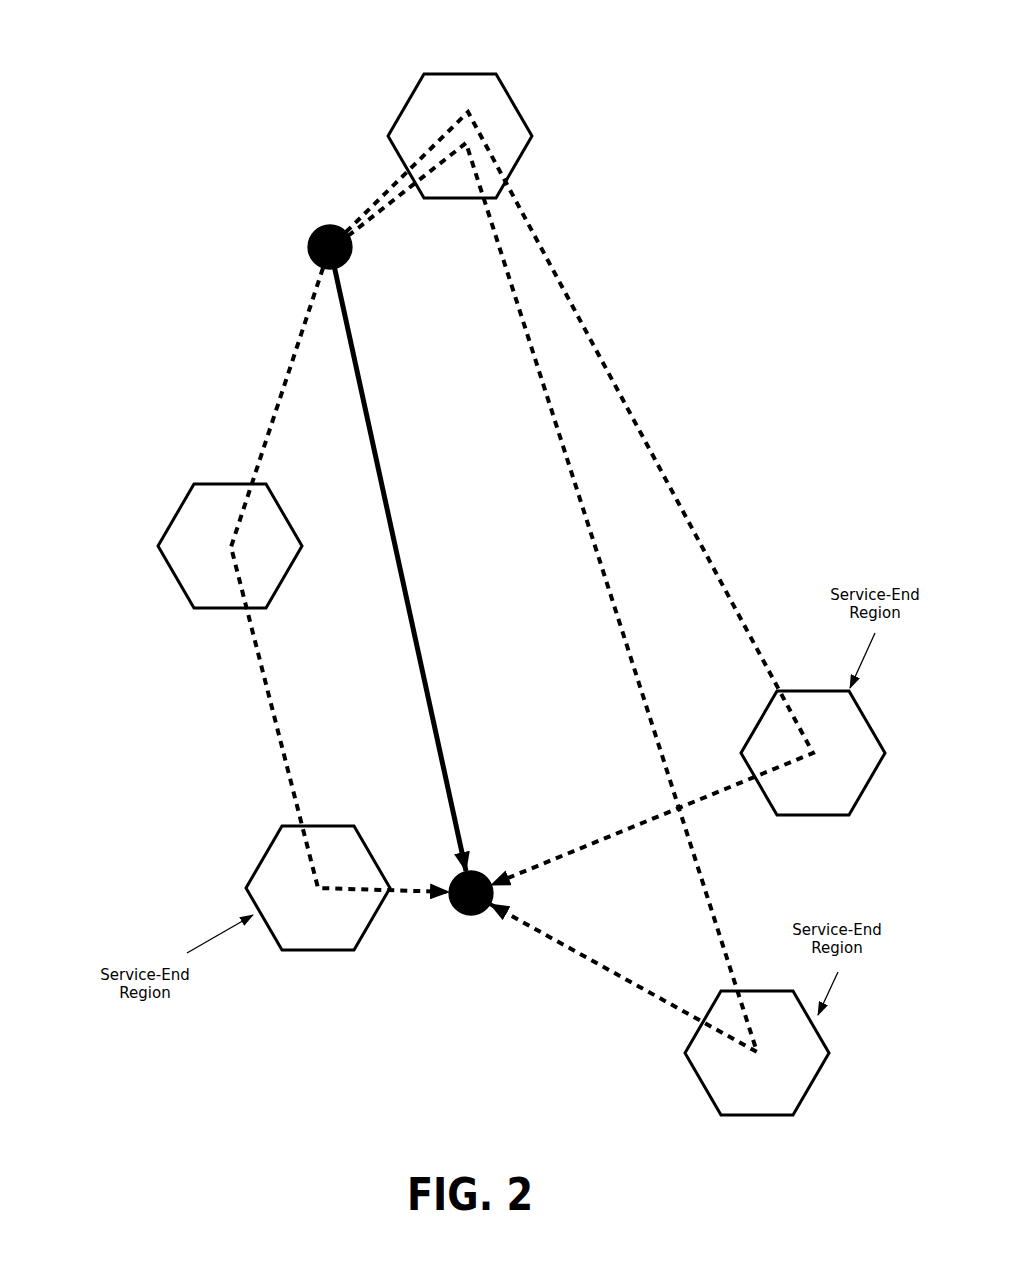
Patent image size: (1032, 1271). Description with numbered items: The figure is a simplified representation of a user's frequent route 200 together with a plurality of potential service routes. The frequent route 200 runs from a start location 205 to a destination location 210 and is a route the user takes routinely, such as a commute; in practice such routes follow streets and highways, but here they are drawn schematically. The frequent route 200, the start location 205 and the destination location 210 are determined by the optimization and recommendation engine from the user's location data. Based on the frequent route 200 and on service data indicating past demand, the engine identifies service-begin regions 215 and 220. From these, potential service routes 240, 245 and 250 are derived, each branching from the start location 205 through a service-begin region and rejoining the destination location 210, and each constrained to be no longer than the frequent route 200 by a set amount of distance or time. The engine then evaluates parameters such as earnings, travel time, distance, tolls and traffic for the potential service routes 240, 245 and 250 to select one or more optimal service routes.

The frequent route 200 is at (414, 559).
The start location 205 is at (287, 217).
The destination location 210 is at (437, 977).
The service-begin region 215 is at (170, 517).
The service-begin region 220 is at (529, 113).
The potential service route 240 is at (258, 572).
The potential service route 245 is at (599, 498).
The potential service route 250 is at (618, 597).